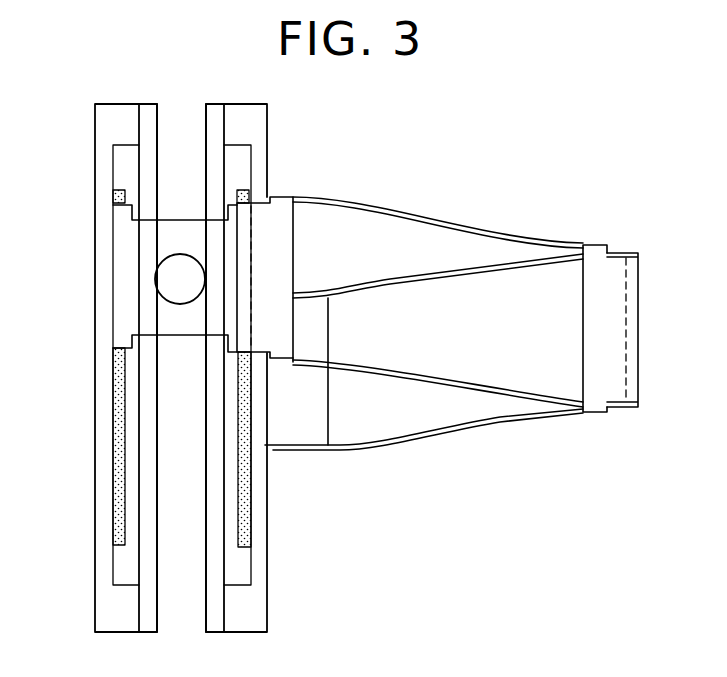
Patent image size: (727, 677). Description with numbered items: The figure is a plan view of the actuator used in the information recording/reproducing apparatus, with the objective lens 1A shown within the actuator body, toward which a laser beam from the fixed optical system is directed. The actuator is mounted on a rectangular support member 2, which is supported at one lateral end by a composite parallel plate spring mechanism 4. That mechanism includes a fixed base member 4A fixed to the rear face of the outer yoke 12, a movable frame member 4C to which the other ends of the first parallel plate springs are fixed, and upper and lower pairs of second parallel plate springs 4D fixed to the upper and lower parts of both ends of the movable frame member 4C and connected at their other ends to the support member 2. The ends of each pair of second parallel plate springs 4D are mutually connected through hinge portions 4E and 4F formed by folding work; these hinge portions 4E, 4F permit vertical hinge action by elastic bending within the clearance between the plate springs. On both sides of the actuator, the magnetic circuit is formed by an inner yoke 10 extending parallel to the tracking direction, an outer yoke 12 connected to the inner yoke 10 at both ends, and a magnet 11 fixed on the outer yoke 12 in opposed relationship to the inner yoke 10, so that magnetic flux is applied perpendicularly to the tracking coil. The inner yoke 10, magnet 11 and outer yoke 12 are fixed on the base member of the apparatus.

The objective lens 1A is at (168, 270).
The support member 2 is at (123, 292).
The composite parallel plate spring mechanism 4 is at (437, 318).
The fixed base member 4A is at (318, 420).
The movable frame member 4C is at (633, 392).
The second parallel plate springs 4D is at (423, 218).
The hinge portion 4E is at (277, 223).
The hinge portion 4F is at (593, 327).
The inner yoke 10 is at (212, 615).
The magnet 11 is at (112, 453).
The outer yoke 12 is at (95, 550).